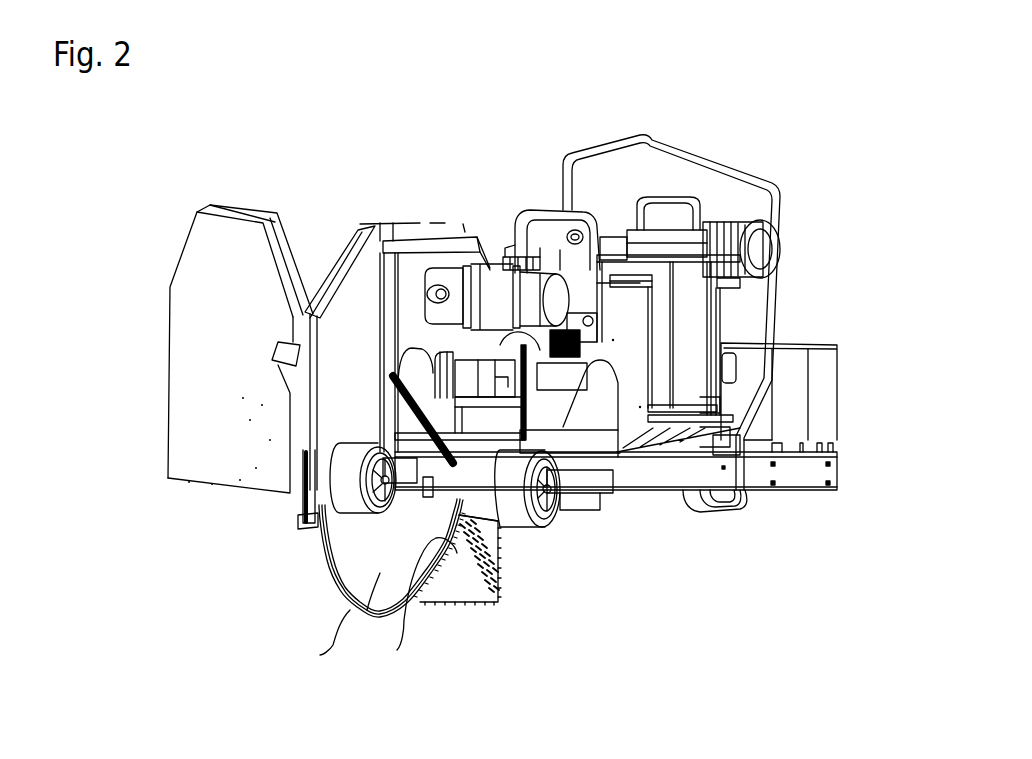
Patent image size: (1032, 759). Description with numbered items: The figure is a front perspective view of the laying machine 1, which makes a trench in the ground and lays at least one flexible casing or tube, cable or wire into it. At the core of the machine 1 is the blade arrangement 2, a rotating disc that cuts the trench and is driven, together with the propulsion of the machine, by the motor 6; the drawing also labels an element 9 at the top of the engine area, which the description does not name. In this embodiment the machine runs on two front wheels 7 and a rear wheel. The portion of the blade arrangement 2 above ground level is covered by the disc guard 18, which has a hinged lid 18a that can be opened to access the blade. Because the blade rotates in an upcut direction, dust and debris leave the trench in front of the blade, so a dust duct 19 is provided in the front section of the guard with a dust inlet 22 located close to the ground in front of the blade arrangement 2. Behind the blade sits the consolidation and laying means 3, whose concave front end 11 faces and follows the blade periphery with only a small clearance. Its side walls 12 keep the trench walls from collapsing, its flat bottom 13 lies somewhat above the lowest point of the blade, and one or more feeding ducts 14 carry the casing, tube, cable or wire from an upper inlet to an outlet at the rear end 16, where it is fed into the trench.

The laying machine 1 is at (812, 277).
The blade arrangement 2 is at (365, 601).
The consolidation and laying means 3 is at (482, 648).
The motor 6 is at (557, 235).
The front wheels 7 is at (308, 496).
The engine cover 9 is at (670, 212).
The concave front end 11 is at (397, 650).
The side walls 12 is at (462, 590).
The bottom 13 is at (475, 612).
The feeding duct 14 is at (503, 573).
The rear end 16 is at (512, 549).
The disc guard 18 is at (360, 264).
The hinged lid 18a is at (212, 417).
The dust duct 19 is at (390, 258).
The dust inlet 22 is at (275, 350).